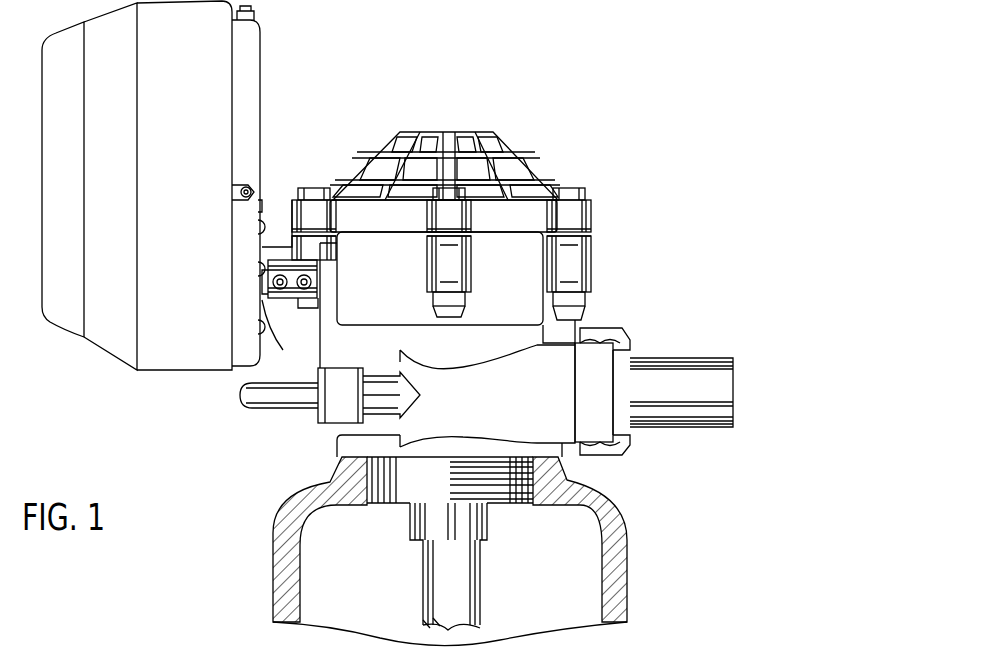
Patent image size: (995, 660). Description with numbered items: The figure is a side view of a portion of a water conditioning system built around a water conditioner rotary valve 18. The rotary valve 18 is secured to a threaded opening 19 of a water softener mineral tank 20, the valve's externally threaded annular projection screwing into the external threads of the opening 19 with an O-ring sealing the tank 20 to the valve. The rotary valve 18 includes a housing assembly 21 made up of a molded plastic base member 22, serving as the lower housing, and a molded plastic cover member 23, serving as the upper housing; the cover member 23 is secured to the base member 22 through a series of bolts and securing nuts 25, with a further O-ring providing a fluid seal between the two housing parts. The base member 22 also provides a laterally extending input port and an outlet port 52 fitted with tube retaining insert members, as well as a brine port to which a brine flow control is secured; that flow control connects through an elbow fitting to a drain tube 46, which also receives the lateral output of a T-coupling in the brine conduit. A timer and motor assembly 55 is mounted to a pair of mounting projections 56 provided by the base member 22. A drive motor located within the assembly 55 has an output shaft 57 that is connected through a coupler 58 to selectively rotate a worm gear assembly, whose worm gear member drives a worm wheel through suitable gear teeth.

The water conditioner rotary valve 18 is at (601, 138).
The threaded opening 19 is at (556, 503).
The water softener mineral tank 20 is at (612, 578).
The housing assembly 21 is at (612, 218).
The base member 22 is at (580, 258).
The cover member 23 is at (520, 158).
The securing nuts 25 is at (588, 298).
The drain tube 46 is at (254, 406).
The outlet port 52 is at (707, 415).
The timer and motor assembly 55 is at (262, 53).
The mounting projections 56 is at (278, 247).
The output shaft 57 is at (283, 331).
The coupler 58 is at (290, 290).